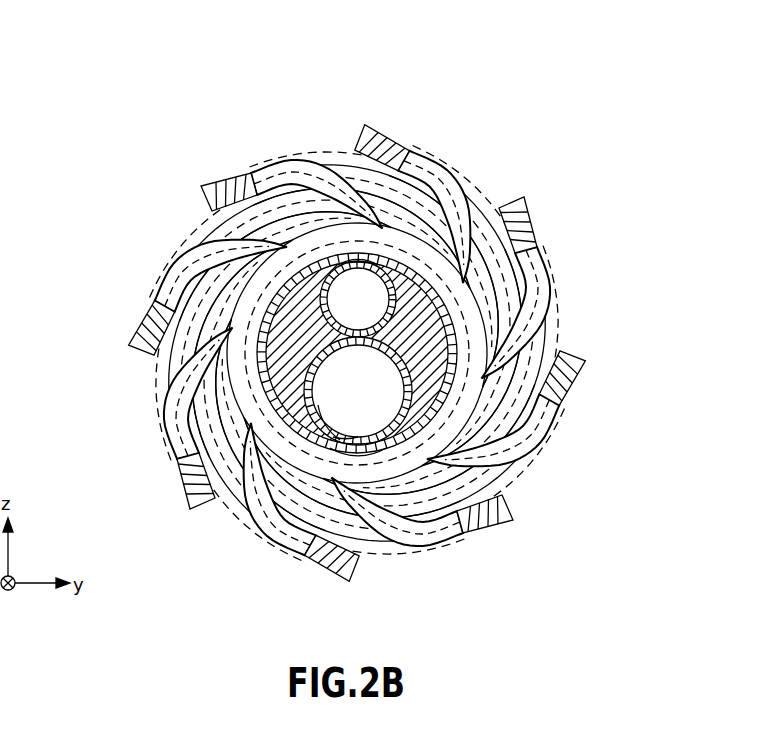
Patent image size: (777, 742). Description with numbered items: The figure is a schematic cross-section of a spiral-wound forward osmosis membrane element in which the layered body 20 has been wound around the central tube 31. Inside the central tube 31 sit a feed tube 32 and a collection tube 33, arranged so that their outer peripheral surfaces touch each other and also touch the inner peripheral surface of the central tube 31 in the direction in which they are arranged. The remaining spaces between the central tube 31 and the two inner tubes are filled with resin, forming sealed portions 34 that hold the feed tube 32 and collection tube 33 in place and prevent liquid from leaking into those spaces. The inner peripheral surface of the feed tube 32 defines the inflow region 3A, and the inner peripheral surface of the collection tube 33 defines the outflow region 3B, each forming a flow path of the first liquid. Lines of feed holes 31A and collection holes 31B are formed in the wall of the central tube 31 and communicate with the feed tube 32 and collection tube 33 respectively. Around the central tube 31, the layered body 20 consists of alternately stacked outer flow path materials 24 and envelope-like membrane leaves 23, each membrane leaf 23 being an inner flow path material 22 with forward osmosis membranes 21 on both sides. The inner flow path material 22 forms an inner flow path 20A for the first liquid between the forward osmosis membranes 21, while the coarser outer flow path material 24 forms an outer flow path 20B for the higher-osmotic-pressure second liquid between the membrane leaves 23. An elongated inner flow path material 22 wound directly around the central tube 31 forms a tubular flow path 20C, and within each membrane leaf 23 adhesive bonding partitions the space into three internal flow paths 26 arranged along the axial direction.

The inflow region 3A is at (358, 391).
The outflow region 3B is at (358, 299).
The layered body 20 is at (548, 236).
The inner flow path 20A is at (492, 273).
The outer flow path 20B is at (510, 292).
The tubular flow path 20C is at (470, 398).
The forward osmosis membrane 21 is at (415, 167).
The inner flow path material 22 is at (442, 163).
The membrane leaf 23 is at (545, 60).
The outer flow path material 24 is at (490, 172).
The internal flow path 26 is at (476, 205).
The central tube 31 is at (258, 362).
The feed hole 31A is at (360, 460).
The collection hole 31B is at (357, 262).
The feed tube 32 is at (333, 437).
The collection tube 33 is at (318, 285).
The sealed portion 34 is at (318, 405).